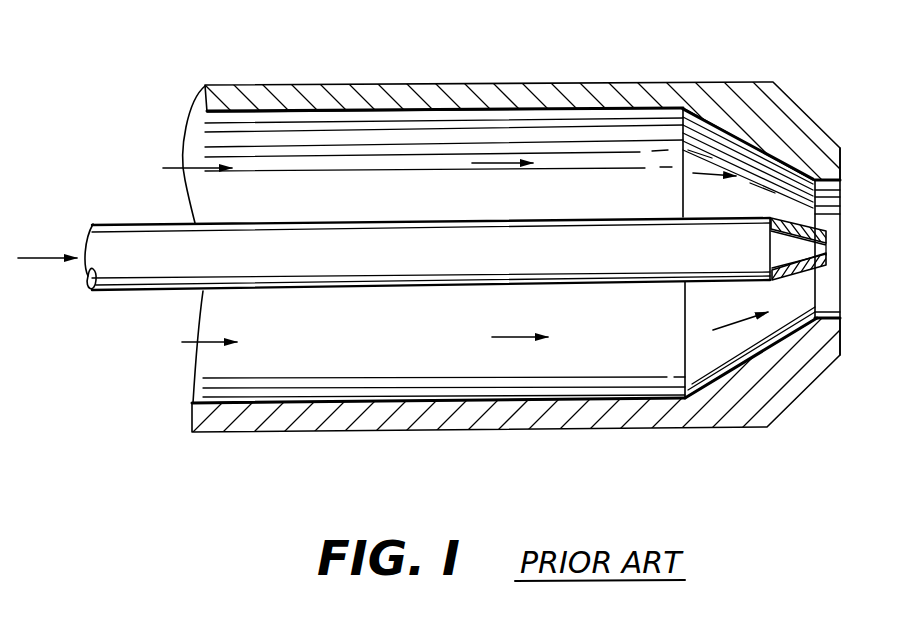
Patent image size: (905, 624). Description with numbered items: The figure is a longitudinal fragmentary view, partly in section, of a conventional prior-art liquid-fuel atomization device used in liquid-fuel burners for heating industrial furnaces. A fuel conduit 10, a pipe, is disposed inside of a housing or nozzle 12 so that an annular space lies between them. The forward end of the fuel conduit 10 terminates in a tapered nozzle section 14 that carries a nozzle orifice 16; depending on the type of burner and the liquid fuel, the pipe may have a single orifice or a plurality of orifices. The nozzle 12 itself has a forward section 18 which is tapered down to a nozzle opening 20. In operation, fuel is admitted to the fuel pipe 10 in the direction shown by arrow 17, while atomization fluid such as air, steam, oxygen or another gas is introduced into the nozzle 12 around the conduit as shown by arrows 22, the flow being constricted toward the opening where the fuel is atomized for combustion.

The fuel conduit 10 is at (440, 263).
The housing or nozzle 12 is at (481, 82).
The tapered nozzle section 14 is at (806, 220).
The nozzle orifice 16 is at (826, 250).
The arrow 17 is at (42, 259).
The forward section 18 is at (842, 150).
The nozzle opening 20 is at (840, 190).
The arrows 22 is at (167, 170).